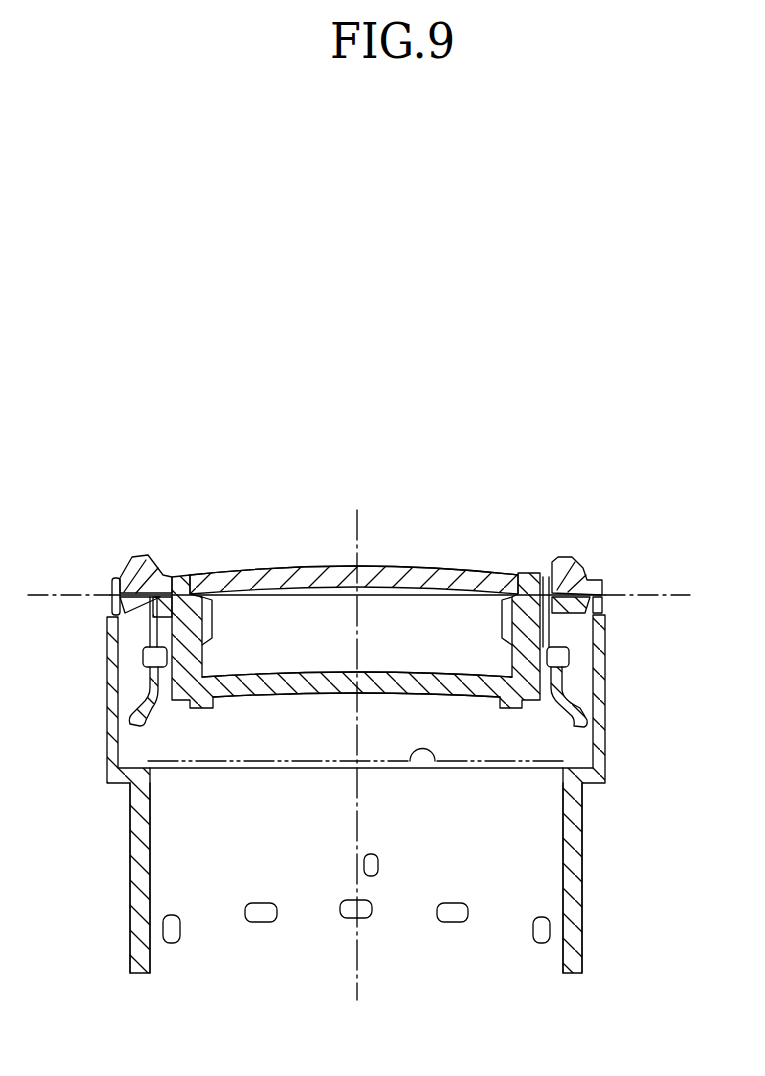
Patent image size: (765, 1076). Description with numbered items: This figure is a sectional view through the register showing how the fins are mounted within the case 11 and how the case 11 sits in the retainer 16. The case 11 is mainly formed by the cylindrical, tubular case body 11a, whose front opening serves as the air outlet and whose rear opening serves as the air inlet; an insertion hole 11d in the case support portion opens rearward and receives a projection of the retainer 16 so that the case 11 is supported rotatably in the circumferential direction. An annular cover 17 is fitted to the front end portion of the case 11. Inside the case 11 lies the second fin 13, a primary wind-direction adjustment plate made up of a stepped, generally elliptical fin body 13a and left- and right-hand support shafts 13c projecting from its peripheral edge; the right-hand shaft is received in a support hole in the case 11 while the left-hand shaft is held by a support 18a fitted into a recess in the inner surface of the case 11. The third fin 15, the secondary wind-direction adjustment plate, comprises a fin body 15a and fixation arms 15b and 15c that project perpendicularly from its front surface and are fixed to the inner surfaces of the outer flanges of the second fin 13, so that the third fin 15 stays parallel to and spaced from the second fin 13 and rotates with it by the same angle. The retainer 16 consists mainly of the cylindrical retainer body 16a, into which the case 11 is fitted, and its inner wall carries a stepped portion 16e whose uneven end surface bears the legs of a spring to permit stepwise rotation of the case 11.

The case 11 is at (127, 577).
The case body 11a is at (150, 704).
The insertion hole 11d is at (140, 645).
The second fin 13 is at (413, 562).
The fin body 13a is at (280, 574).
The support shafts 13c is at (143, 660).
The third fin 15 is at (297, 704).
The fin body 15a is at (408, 684).
The fixation arm 15b is at (206, 633).
The fixation arm 15c is at (514, 645).
The retainer 16 is at (608, 770).
The retainer body 16a is at (576, 880).
The stepped portion 16e is at (442, 770).
The cover 17 is at (594, 569).
The supports 18a is at (145, 674).